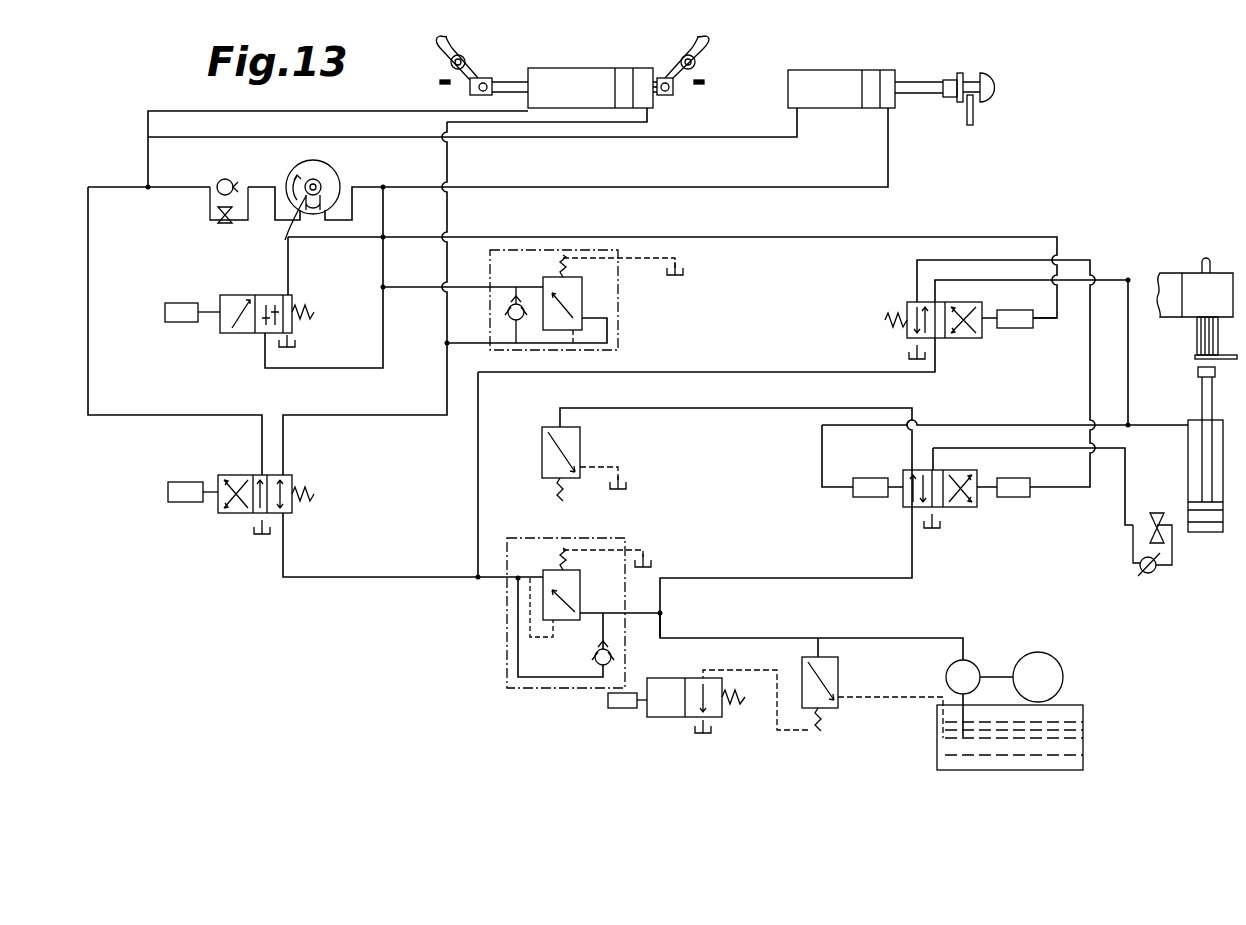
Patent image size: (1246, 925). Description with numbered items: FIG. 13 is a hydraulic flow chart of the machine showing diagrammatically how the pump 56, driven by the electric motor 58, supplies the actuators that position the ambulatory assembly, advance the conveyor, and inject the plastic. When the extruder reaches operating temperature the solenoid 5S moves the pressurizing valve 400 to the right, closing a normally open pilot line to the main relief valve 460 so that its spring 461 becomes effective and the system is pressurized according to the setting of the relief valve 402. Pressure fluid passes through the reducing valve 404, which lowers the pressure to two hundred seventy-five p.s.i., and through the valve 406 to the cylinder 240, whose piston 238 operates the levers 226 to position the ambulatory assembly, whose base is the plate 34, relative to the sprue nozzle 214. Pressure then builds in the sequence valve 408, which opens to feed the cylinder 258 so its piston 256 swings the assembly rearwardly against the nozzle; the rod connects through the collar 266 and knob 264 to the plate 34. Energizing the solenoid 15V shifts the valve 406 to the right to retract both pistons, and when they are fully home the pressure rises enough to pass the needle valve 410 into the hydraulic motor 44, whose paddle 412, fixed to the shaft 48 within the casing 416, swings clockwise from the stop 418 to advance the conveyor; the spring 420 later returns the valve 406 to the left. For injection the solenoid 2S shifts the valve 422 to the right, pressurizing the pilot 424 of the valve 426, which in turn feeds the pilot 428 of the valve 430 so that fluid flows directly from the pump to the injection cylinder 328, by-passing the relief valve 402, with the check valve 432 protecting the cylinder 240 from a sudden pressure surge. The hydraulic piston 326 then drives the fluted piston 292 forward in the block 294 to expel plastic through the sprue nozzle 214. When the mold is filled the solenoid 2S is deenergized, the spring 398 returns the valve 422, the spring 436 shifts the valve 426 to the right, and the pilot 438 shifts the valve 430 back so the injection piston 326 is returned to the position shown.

The piston 238 is at (608, 108).
The cylinder 240 is at (553, 110).
The levers 226 is at (432, 66).
The cylinder 258 is at (825, 108).
The piston 256 is at (928, 93).
The rod collar 266 is at (961, 73).
The lock knob 264 is at (990, 85).
The plate 34 is at (973, 118).
The needle valve 410 is at (216, 228).
The hydraulic motor 44 is at (301, 205).
The casing 416 is at (290, 172).
The power output shaft 48 is at (321, 187).
The stop 418 is at (312, 208).
The paddle 412 is at (275, 224).
The valve 422 is at (240, 333).
The spring 398 is at (314, 312).
The solenoid 2S is at (172, 303).
The valve 406 is at (256, 514).
The spring 420 is at (314, 494).
The solenoid 15V is at (190, 503).
The sequence valve 408 is at (582, 295).
The relief valve 402 is at (542, 440).
The reducing valve 404 is at (543, 572).
The pressurizing valve 400 is at (670, 718).
The solenoid 5S is at (620, 708).
The main relief valve 460 is at (838, 660).
The spring 461 is at (822, 728).
The pump 56 is at (972, 662).
The electric motor 58 is at (1047, 657).
The valve 426 is at (960, 338).
The spring 436 is at (885, 318).
The pilot 424 is at (1012, 328).
The valve 430 is at (955, 508).
The pilot 428 is at (1013, 498).
The pilot 438 is at (868, 498).
The check valve 432 is at (1156, 515).
The block 294 is at (1176, 275).
The sprue nozzle 214 is at (1222, 252).
The piston 292 is at (1197, 335).
The hydraulic piston 326 is at (1200, 396).
The injection cylinder 328 is at (1201, 532).